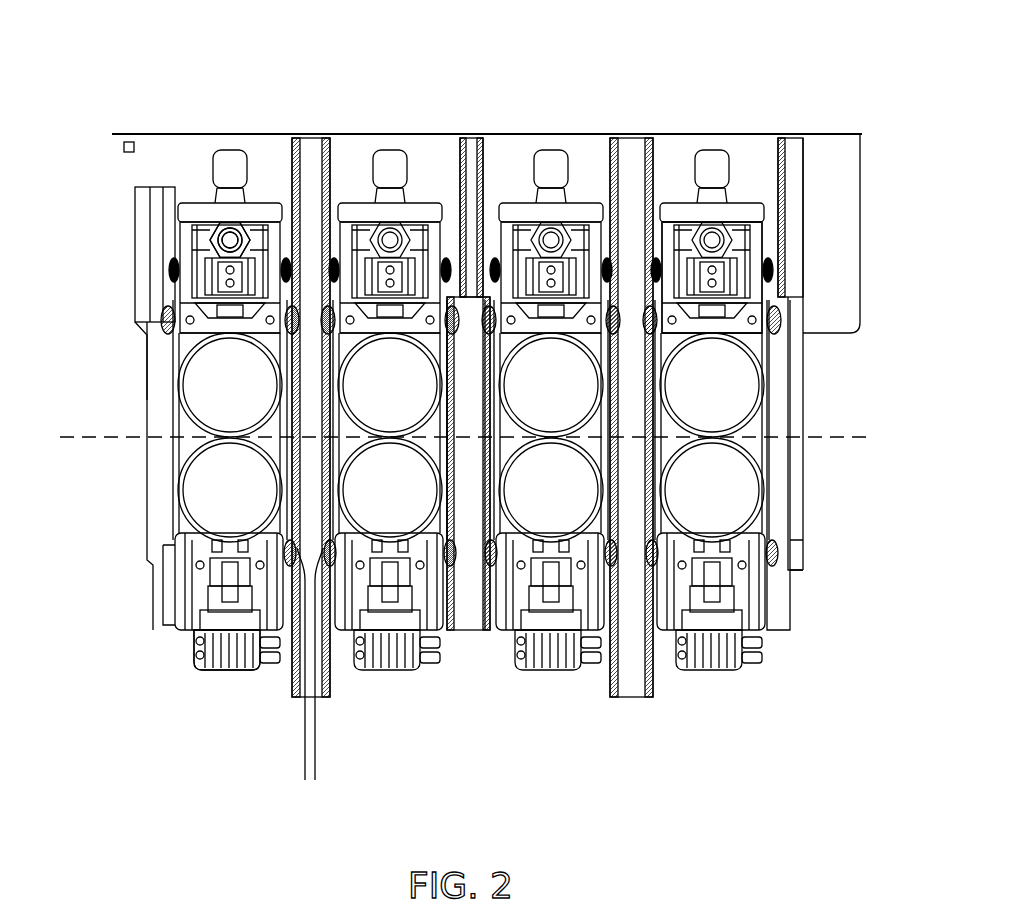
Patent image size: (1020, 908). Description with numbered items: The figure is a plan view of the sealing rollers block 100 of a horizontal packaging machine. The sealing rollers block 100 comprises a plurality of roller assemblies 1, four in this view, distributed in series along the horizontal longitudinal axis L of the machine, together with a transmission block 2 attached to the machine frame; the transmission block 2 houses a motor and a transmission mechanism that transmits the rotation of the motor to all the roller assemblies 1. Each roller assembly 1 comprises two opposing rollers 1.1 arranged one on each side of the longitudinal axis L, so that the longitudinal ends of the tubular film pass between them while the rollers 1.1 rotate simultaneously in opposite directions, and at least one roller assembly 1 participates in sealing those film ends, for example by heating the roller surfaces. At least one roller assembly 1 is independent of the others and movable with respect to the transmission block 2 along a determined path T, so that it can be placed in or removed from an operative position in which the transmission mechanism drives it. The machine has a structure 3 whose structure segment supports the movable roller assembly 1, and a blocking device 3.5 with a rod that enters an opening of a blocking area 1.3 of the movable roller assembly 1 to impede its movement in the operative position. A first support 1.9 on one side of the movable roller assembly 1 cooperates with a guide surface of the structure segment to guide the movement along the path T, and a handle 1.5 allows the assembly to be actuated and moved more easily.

The sealing rollers block 100 is at (395, 88).
The structure 3 is at (503, 131).
The transmission block 2 is at (830, 190).
The roller assembly 1 is at (798, 660).
The rollers 1.1 is at (215, 385).
The blocking area 1.3 is at (208, 240).
The handle 1.5 is at (180, 212).
The blocking device 3.5 is at (230, 236).
The first support 1.9 is at (312, 680).
The horizontal longitudinal axis L is at (865, 437).
The determined path T is at (230, 722).